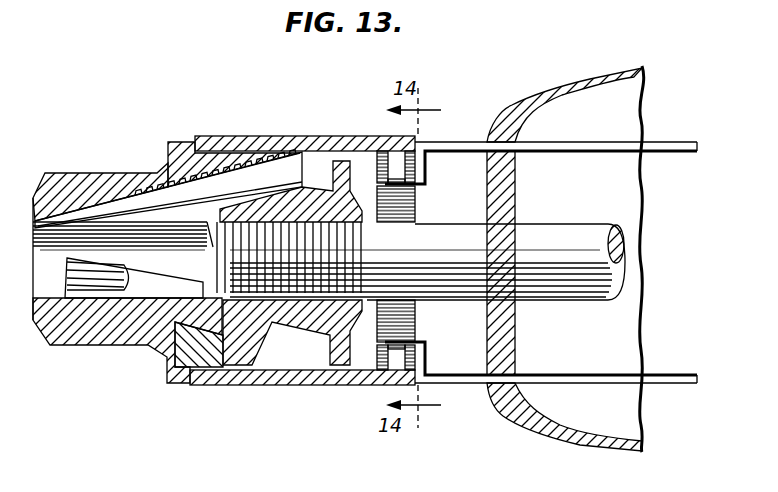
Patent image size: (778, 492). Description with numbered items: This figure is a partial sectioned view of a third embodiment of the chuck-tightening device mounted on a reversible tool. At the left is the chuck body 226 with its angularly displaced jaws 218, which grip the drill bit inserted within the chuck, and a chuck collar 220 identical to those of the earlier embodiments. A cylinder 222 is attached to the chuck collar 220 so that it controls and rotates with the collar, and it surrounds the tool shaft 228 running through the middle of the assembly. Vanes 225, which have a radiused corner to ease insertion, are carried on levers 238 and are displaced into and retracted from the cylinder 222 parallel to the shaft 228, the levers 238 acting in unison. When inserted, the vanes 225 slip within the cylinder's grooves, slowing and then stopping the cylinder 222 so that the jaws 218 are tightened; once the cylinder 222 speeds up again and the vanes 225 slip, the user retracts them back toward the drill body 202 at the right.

The drill body 202 is at (573, 440).
The angular jaws 218 is at (122, 203).
The chuck collar 220 is at (192, 160).
The cylinder 222 is at (207, 138).
The vanes 225 is at (395, 207).
The chuck body 226 is at (77, 333).
The shaft 228 is at (487, 251).
The levers 238 is at (462, 141).